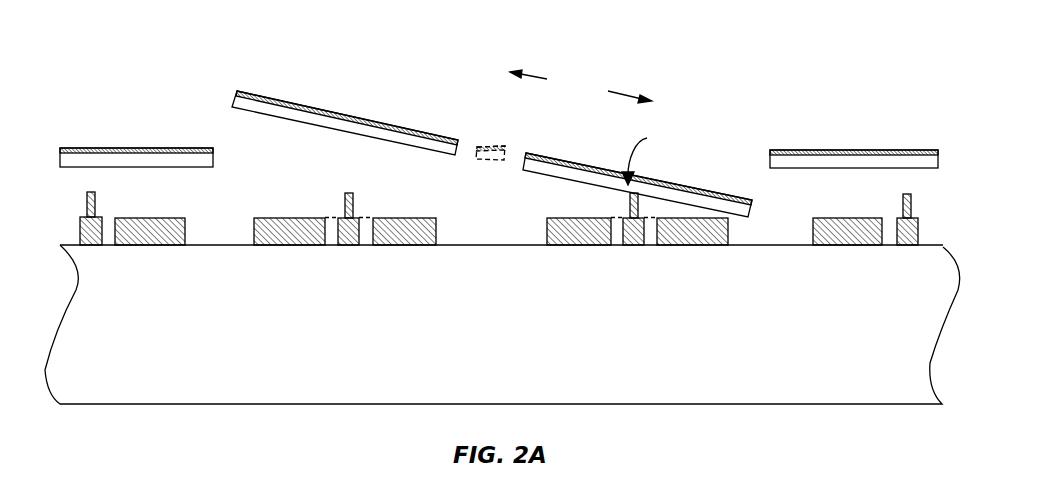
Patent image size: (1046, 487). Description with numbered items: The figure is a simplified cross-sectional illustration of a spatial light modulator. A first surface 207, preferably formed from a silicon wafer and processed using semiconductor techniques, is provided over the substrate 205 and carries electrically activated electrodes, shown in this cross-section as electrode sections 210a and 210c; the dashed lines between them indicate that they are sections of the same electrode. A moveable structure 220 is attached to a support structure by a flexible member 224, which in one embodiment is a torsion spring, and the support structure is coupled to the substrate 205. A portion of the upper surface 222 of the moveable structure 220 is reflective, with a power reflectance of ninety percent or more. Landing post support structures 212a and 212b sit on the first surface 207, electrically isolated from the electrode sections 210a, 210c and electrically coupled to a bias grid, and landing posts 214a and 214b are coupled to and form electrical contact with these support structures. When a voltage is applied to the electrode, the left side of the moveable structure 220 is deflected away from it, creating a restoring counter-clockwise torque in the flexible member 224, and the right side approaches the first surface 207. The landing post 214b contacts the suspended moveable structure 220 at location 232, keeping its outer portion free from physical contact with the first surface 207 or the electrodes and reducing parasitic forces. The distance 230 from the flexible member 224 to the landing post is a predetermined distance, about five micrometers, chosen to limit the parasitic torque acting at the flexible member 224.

The substrate 205 is at (896, 384).
The first surface 207 is at (508, 247).
The electrode section 210a is at (288, 240).
The electrode section 210c is at (405, 240).
The landing post support structure 212a is at (343, 238).
The landing post support structure 212b is at (632, 240).
The landing post 214a is at (343, 205).
The landing post 214b is at (629, 208).
The moveable structure 220 is at (232, 107).
The upper surface 222 is at (330, 112).
The flexible member 224 is at (498, 143).
The distance 230 is at (581, 86).
The contact location 232 is at (663, 153).